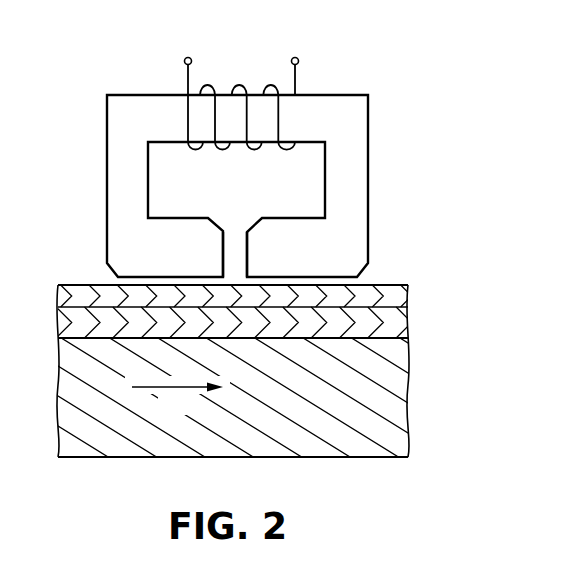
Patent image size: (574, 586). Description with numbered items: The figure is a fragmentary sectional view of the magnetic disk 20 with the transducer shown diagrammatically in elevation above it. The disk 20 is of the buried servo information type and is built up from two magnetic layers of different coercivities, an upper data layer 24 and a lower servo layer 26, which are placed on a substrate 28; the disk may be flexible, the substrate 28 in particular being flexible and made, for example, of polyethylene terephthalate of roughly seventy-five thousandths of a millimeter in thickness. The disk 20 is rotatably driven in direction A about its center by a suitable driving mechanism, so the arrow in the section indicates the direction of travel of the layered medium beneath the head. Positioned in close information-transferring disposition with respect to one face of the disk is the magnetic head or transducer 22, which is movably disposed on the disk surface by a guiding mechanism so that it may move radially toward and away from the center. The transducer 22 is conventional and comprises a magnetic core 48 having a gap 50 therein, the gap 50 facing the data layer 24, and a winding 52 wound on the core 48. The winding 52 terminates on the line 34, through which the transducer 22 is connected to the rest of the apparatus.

The magnetic disk 20 is at (283, 353).
The magnetic head or transducer 22 is at (274, 139).
The upper data layer 24 is at (403, 297).
The lower servo layer 26 is at (397, 325).
The substrate 28 is at (390, 402).
The line 34 is at (302, 46).
The magnetic core 48 is at (368, 157).
The gap 50 is at (235, 230).
The winding 52 is at (297, 78).